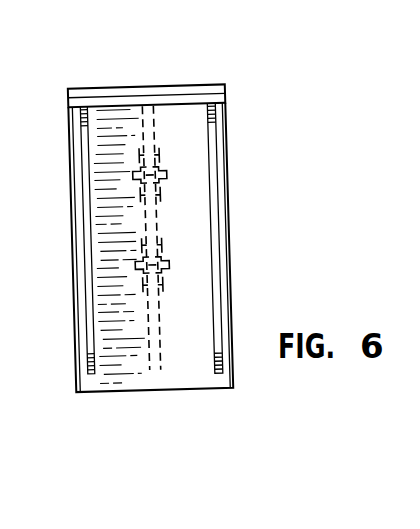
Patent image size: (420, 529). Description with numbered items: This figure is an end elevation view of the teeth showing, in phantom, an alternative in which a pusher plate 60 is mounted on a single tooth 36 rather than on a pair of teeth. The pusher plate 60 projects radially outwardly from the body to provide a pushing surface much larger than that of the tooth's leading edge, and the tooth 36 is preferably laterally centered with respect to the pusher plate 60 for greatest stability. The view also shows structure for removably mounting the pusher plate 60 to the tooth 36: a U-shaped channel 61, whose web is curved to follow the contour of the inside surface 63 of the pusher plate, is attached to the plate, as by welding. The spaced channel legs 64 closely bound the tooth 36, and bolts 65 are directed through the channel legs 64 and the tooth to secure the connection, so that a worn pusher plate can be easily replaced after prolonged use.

The tooth 36 is at (155, 303).
The pusher plate 60 is at (134, 84).
The U-shaped channel 61 is at (163, 153).
The inside surface of the pusher plate 63 is at (183, 230).
The channel legs 64 is at (163, 192).
The bolts 65 is at (167, 167).